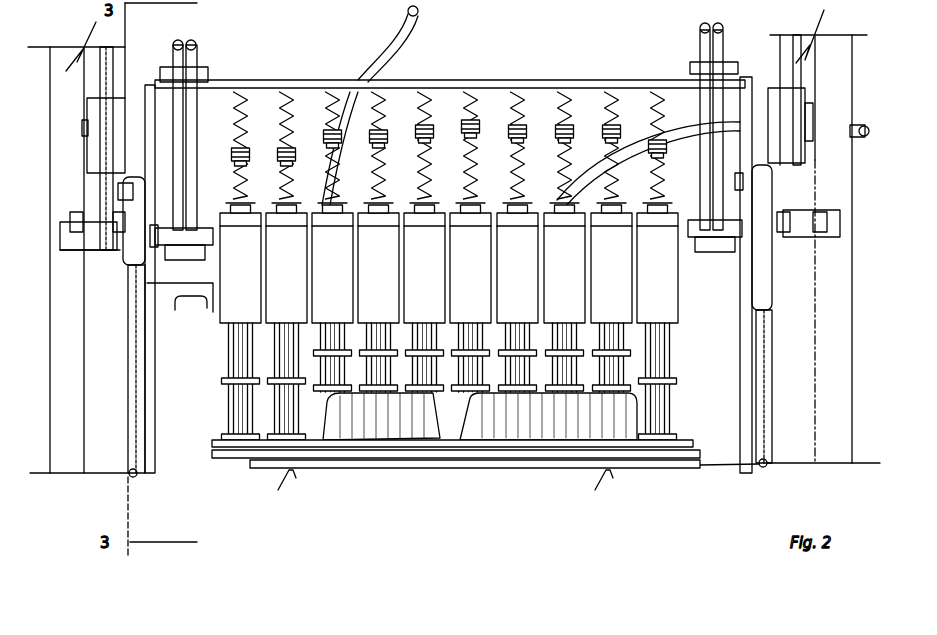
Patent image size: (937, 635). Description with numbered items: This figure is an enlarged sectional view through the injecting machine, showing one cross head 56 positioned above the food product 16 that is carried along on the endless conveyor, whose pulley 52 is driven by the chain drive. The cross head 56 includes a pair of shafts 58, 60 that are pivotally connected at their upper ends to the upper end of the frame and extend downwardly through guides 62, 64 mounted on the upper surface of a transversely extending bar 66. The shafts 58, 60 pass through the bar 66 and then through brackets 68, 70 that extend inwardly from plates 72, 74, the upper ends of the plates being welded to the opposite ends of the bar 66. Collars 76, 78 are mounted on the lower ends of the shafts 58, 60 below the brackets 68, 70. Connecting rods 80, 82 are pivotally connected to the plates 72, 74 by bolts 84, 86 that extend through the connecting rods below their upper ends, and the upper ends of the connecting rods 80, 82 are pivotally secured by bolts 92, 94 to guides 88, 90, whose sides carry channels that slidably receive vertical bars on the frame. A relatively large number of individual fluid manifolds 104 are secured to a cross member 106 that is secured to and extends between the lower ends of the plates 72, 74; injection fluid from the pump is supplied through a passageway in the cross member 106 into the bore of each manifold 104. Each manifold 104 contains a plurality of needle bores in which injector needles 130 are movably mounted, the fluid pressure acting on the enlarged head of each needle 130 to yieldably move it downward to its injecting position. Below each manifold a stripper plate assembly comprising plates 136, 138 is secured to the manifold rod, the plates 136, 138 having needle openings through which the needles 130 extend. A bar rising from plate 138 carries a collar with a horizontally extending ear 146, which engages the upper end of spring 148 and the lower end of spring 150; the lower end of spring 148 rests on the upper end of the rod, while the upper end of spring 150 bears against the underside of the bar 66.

The food product 16 is at (512, 460).
The pulley 52 is at (545, 462).
The cross head 56 is at (432, 70).
The shaft 58 is at (197, 46).
The shaft 60 is at (700, 31).
The guide 62 is at (206, 74).
The guide 64 is at (692, 66).
The bar 66 is at (455, 80).
The bracket 68 is at (207, 228).
The bracket 70 is at (735, 240).
The plate 72 is at (160, 112).
The plate 74 is at (757, 92).
The collar 76 is at (198, 265).
The collar 78 is at (740, 255).
The connecting rod 80 is at (145, 390).
The connecting rod 82 is at (772, 335).
The bolt 84 is at (120, 178).
The bolt 86 is at (772, 186).
The guide 88 is at (125, 102).
The guide 90 is at (807, 100).
The bolt 92 is at (85, 129).
The bolt 94 is at (811, 118).
The fluid manifold 104 is at (262, 318).
The cross member 106 is at (199, 306).
The injector needle 130 is at (248, 415).
The plate 136 is at (240, 432).
The plate 138 is at (228, 382).
The ear 146 is at (296, 157).
The spring 148 is at (573, 135).
The spring 150 is at (290, 150).